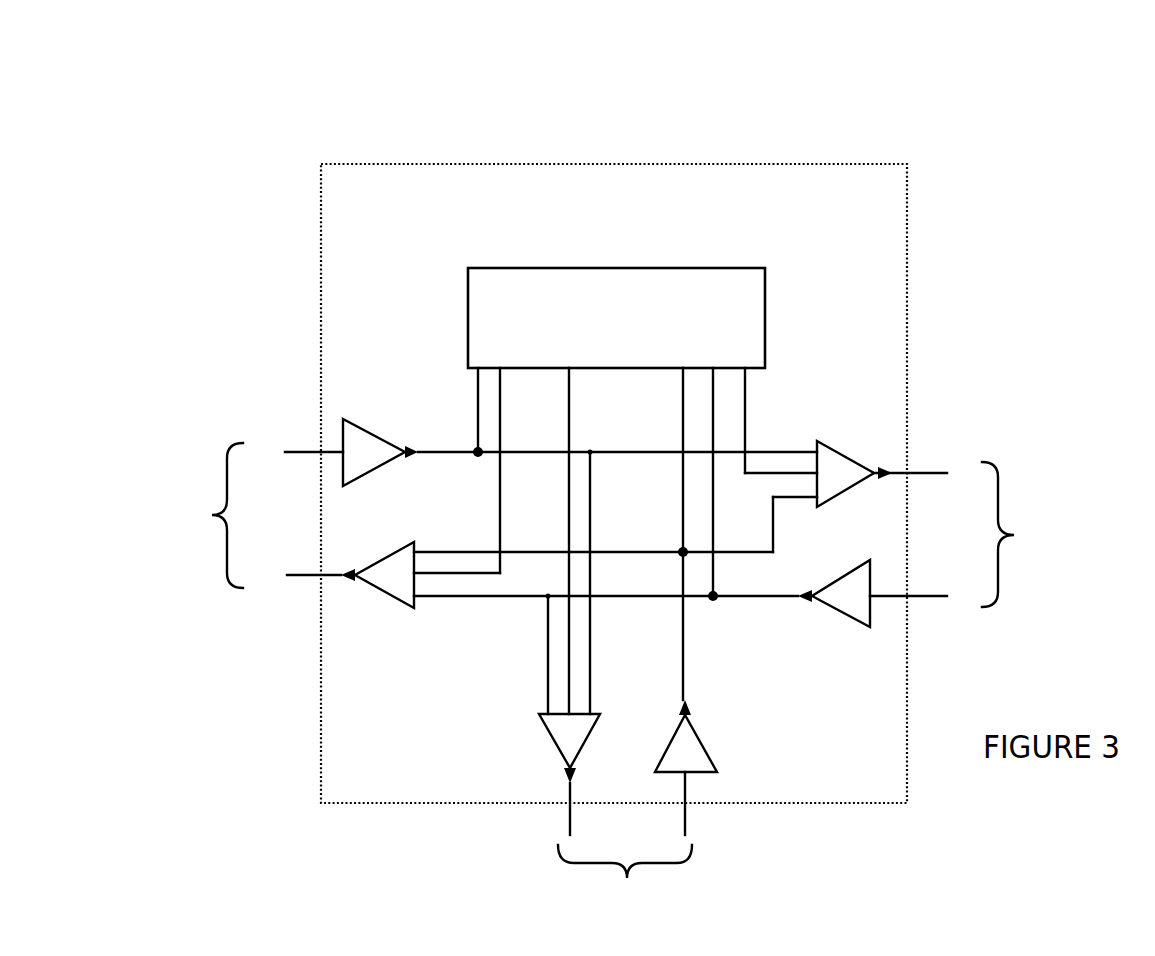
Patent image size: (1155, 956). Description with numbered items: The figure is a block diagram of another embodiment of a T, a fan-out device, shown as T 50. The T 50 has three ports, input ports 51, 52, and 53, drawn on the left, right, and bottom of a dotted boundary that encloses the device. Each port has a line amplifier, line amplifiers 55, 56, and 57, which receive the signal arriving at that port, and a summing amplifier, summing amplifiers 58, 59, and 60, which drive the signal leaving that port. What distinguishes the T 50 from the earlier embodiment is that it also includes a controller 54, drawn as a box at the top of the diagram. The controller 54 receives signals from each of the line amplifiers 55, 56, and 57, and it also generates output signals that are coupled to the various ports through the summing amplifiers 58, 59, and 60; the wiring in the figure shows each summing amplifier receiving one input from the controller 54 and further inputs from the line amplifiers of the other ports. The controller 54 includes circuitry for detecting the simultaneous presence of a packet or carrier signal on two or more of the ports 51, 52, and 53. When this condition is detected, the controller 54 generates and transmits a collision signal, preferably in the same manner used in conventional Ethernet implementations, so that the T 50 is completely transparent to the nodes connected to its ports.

The T 50 is at (468, 162).
The input port 51 is at (203, 515).
The input port 52 is at (1025, 534).
The input port 53 is at (625, 882).
The controller 54 is at (616, 318).
The line amplifier 55 is at (388, 438).
The line amplifier 56 is at (838, 574).
The line amplifier 57 is at (705, 748).
The summing amplifier 58 is at (388, 553).
The summing amplifier 59 is at (852, 452).
The summing amplifier 60 is at (551, 748).